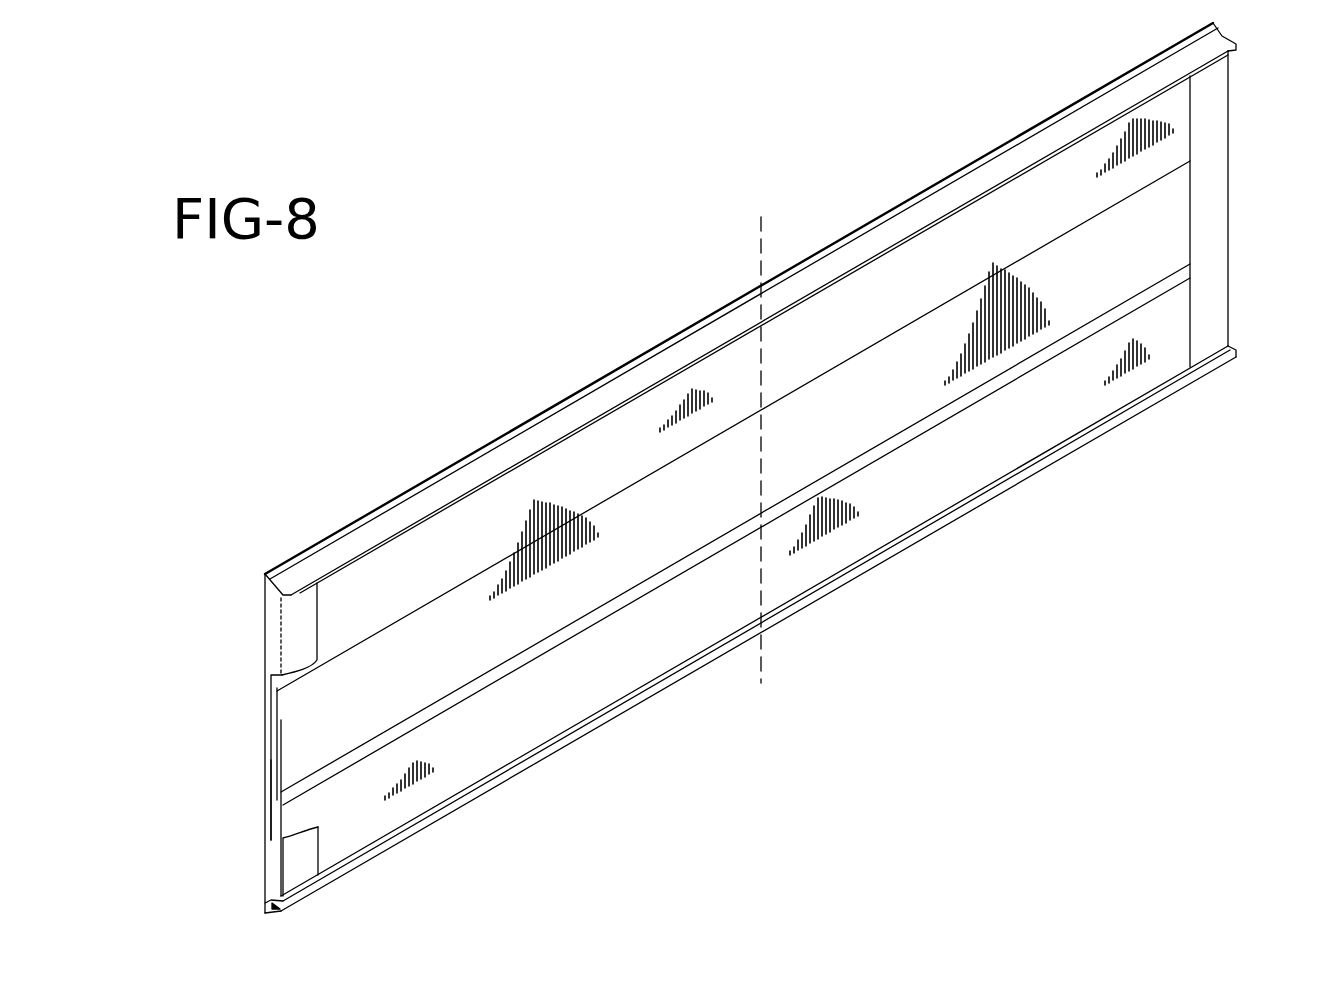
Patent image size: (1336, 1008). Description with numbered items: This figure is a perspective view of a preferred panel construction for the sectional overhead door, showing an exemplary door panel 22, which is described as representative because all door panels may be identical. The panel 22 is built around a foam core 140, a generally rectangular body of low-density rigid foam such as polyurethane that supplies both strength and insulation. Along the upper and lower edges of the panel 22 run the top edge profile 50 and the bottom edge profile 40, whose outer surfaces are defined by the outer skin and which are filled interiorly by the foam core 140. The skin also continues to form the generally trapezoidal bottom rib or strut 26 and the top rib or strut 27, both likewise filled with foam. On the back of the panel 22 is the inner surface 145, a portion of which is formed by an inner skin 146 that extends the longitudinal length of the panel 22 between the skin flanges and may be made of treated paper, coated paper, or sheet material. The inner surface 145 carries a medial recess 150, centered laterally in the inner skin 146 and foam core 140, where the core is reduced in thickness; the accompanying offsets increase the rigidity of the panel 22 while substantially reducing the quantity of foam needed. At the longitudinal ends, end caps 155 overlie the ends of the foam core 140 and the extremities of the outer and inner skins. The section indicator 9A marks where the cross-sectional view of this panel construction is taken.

The top edge profile 50 is at (410, 480).
The door panel 22 is at (1010, 142).
The bottom rib or strut 26 is at (1118, 430).
The top rib or strut 27 is at (548, 432).
The end caps 155 is at (272, 630).
The medial recess 150 is at (275, 724).
The inner surface 145 is at (258, 694).
The foam core 140 is at (272, 762).
The inner skin 146 is at (341, 818).
The bottom edge profile 40 is at (255, 900).
The section line 9A- 9A is at (761, 217).